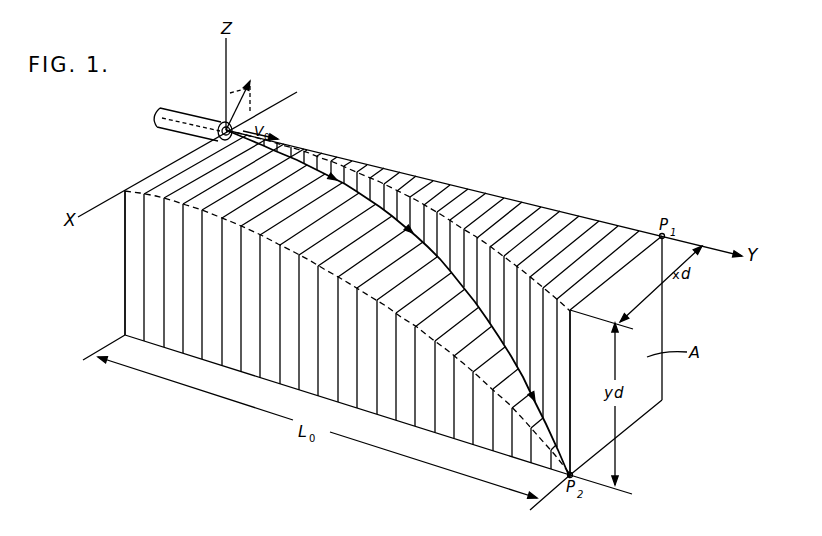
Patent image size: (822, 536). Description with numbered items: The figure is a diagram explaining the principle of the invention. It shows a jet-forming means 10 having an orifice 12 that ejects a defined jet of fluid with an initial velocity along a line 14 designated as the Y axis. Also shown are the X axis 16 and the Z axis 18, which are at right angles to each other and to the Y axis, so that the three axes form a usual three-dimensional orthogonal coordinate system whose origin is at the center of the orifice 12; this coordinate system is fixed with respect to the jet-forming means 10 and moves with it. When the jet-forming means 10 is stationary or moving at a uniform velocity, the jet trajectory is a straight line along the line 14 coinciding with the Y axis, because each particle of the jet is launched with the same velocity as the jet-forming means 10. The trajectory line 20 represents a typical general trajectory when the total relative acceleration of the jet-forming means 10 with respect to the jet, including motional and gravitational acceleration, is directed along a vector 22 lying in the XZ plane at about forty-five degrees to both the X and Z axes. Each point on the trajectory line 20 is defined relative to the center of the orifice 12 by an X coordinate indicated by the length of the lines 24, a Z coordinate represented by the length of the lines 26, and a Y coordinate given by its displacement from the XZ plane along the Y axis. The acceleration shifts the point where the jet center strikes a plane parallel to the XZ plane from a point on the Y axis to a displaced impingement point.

The jet-forming means 10 is at (180, 108).
The orifice 12 is at (218, 138).
The line designated as the Y axis 14 is at (444, 183).
The X axis 16 is at (96, 205).
The Z axis 18 is at (230, 63).
The trajectory line 20 is at (405, 225).
The acceleration vector 22 is at (254, 104).
The X-coordinate lines 24 is at (193, 203).
The Z-coordinate lines 26 is at (182, 298).